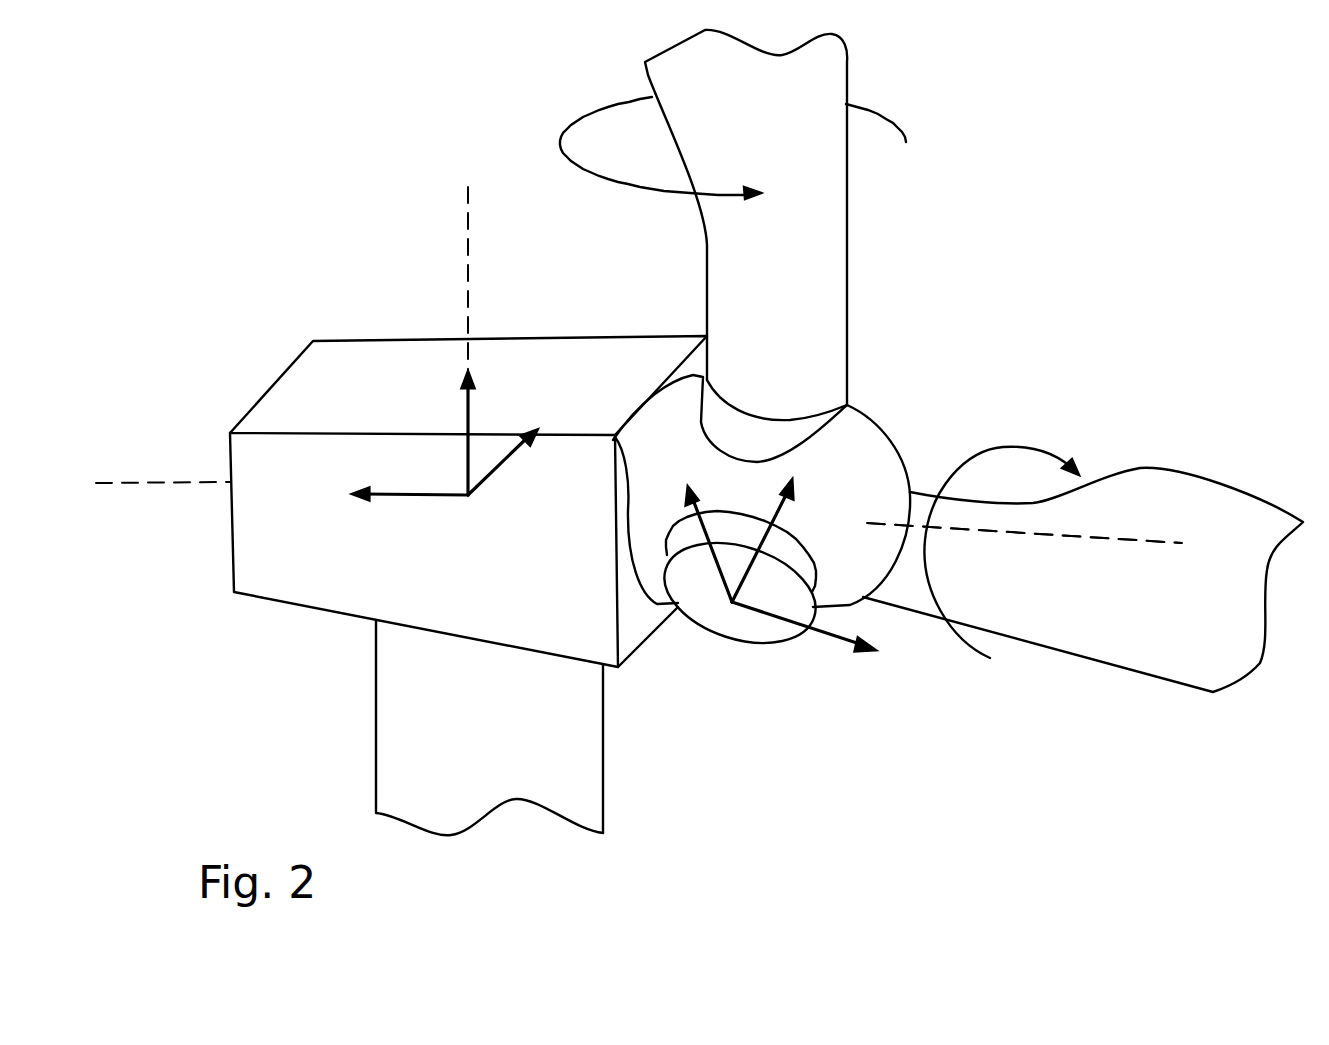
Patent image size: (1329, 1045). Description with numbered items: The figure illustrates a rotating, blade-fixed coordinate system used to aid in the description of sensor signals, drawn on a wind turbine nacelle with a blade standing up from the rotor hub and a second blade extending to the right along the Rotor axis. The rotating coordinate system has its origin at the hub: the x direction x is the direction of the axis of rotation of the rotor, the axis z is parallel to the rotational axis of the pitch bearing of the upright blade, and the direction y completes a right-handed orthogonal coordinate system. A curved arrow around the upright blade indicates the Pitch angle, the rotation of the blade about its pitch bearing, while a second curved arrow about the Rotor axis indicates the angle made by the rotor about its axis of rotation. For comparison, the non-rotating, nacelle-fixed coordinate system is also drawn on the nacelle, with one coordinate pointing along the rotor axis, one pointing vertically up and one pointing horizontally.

The x-direction x is at (710, 529).
The y direction y is at (810, 637).
The z axis z is at (777, 539).
The pitch angle Pitch angle is at (674, 125).
The rotor axis Rotor axis is at (1047, 579).